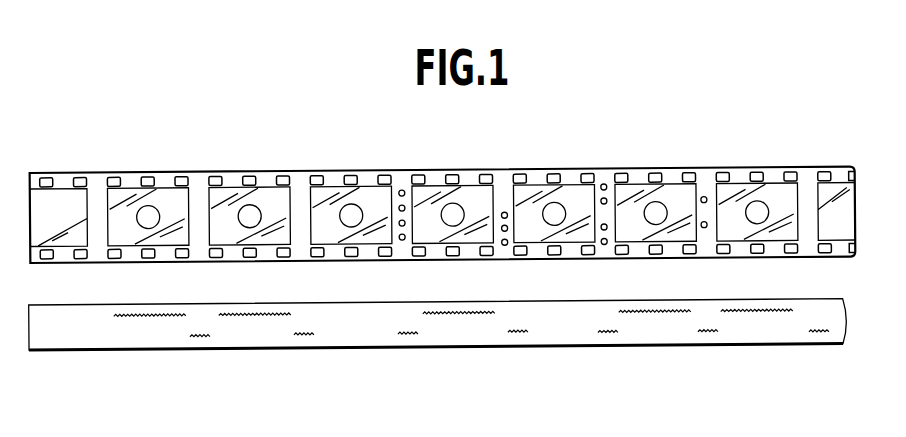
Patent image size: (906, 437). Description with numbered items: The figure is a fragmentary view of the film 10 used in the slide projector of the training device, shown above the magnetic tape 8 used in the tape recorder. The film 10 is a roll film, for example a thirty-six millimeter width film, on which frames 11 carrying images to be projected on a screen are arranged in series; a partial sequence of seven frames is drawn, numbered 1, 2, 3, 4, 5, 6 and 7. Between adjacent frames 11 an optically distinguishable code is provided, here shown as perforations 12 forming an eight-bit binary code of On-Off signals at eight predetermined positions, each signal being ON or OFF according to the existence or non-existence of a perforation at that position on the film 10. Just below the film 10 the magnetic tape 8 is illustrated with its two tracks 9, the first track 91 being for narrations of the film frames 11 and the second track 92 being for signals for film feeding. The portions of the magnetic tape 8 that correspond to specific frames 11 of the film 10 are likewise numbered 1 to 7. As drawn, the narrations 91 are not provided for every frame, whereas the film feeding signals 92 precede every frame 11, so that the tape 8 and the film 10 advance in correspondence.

The frame number one 1 is at (148, 228).
The frame number two 2 is at (250, 227).
The frame number three 3 is at (351, 226).
The frame number four 4 is at (453, 225).
The frame number five 5 is at (554, 225).
The frame number six 6 is at (656, 224).
The frame number seven 7 is at (757, 223).
The magnetic tape 8 is at (437, 342).
The tracks 9 is at (471, 323).
The narration track 91 is at (218, 315).
The film feeding signal track 92 is at (302, 340).
The film 10 is at (442, 210).
The frame 11 is at (249, 227).
The perforations 12 is at (404, 243).